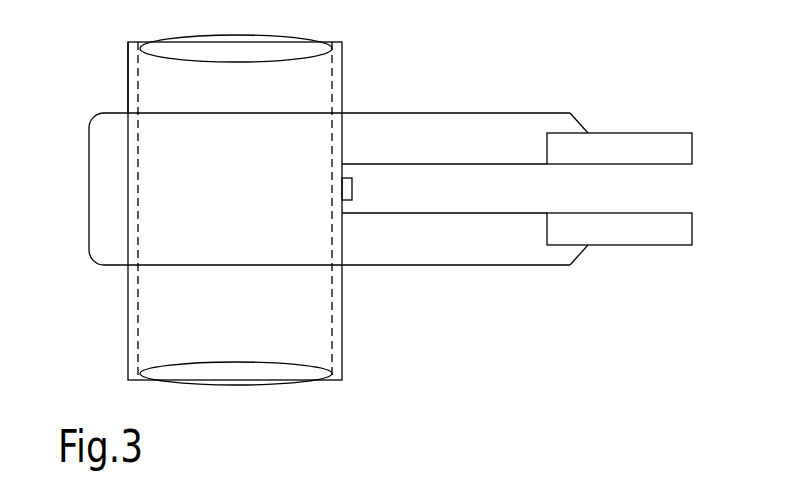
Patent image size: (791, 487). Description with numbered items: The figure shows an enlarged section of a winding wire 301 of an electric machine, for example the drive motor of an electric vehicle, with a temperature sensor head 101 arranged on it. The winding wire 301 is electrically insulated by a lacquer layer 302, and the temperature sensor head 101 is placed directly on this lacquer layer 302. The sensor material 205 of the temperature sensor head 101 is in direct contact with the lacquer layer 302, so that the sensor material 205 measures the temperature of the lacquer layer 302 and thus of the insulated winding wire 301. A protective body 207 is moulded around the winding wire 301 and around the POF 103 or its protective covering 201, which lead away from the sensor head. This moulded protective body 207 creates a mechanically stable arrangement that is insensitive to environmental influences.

The temperature sensor head 101 is at (420, 97).
The POF 103 is at (565, 205).
The protective covering 201 is at (665, 133).
The sensor material 205 is at (350, 198).
The protective body 207 is at (530, 113).
The winding wire 301 is at (250, 336).
The lacquer layer 302 is at (128, 62).